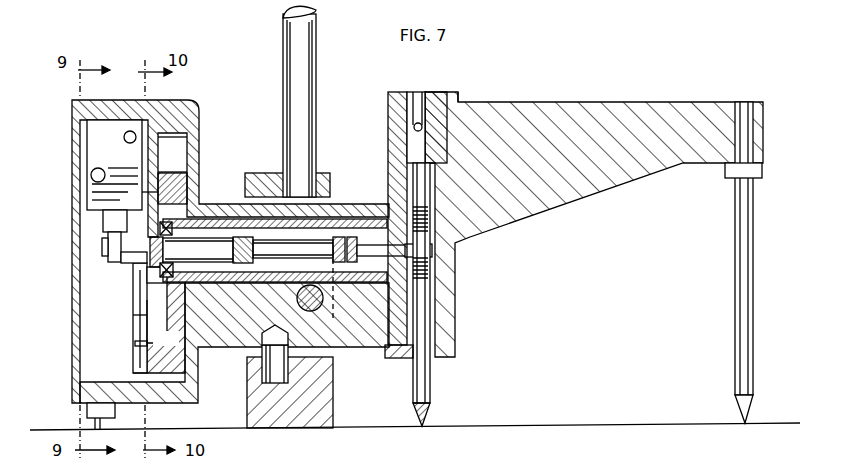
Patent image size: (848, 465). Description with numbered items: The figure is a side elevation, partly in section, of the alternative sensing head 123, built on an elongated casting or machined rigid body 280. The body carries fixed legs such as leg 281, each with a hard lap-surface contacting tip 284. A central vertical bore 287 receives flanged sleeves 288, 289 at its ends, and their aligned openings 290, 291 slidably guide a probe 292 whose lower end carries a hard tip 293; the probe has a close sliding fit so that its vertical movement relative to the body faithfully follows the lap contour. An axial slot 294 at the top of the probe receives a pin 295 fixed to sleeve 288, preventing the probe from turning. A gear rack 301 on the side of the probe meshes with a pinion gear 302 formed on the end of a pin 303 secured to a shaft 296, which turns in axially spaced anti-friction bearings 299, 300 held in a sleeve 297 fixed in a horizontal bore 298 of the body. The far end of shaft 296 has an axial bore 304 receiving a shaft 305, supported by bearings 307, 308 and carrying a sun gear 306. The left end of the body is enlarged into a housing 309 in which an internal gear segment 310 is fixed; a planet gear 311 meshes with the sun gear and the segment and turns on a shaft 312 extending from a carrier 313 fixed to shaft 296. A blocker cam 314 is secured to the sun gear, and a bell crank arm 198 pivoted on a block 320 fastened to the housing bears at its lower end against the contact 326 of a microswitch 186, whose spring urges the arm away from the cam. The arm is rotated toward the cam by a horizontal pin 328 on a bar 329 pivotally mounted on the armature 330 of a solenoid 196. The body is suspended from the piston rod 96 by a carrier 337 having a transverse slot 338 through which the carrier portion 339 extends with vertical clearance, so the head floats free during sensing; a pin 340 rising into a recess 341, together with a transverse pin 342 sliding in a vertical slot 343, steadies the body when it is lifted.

The piston rod 96 is at (318, 83).
The sensing head 123 is at (653, 104).
The microswitch 186 is at (143, 368).
The solenoid 196 is at (125, 163).
The bell crank arm 198 is at (140, 328).
The rigid body 280 is at (583, 120).
The fixed leg 281 is at (740, 307).
The lap surface contacting tip 284 is at (733, 422).
The vertically disposed bore 287 is at (460, 103).
The flanged sleeve 288 is at (403, 92).
The flanged sleeve 289 is at (447, 362).
The opening 290 is at (422, 100).
The opening 291 is at (417, 357).
The probe 292 is at (425, 382).
The lap surface contacting tip 293 is at (427, 423).
The axially extending slot 294 is at (433, 106).
The pin 295 is at (414, 126).
The shaft 296 is at (257, 254).
The sleeve 297 is at (340, 216).
The horizontally disposed bore 298 is at (203, 306).
The anti-friction bearing 299 is at (145, 312).
The anti-friction bearing 300 is at (447, 272).
The gear rack 301 is at (452, 208).
The pinion gear 302 is at (432, 252).
The pin 303 is at (388, 284).
The axially extending bore 304 is at (205, 281).
The shaft 305 is at (207, 285).
The sun gear 306 is at (148, 285).
The bearing 307 is at (147, 297).
The bearing 308 is at (263, 304).
The housing 309 is at (178, 100).
The internal gear segment 310 is at (166, 142).
The planet gear 311 is at (163, 172).
The carrier 313 is at (177, 182).
The shaft 312 is at (153, 192).
The blocker cam 314 is at (133, 290).
The block 320 is at (166, 328).
The microswitch contact 326 is at (136, 345).
The pin 328 is at (120, 262).
The bar 329 is at (113, 261).
The armature 330 is at (107, 214).
The carrier 337 is at (333, 412).
The transverse slot 338 is at (257, 196).
The carrier portion 339 is at (352, 342).
The pin 340 is at (270, 368).
The recess 341 is at (258, 345).
The transverse pin 342 is at (297, 297).
The vertical slot 343 is at (343, 312).